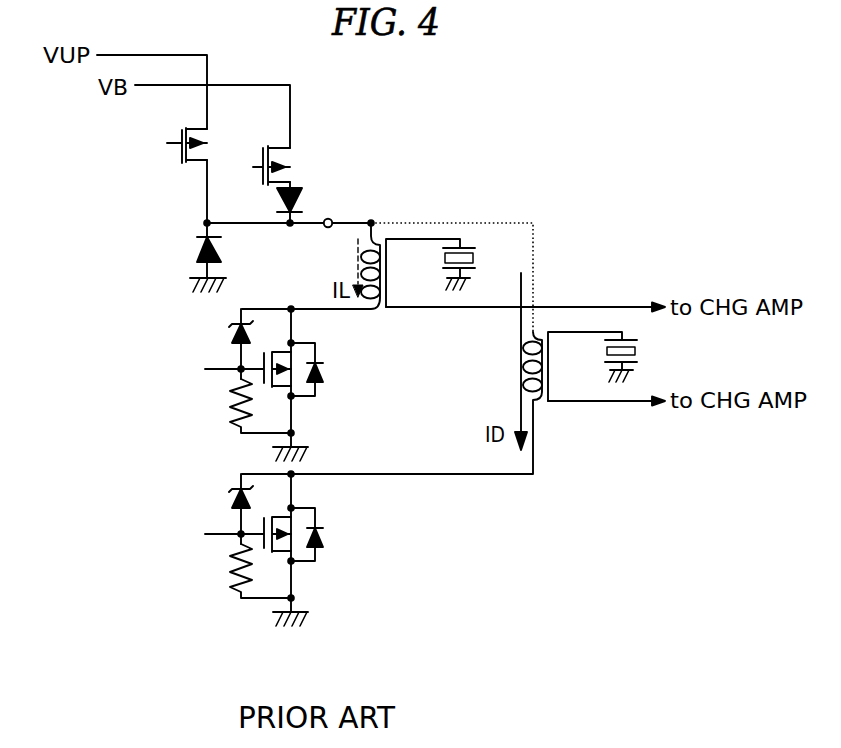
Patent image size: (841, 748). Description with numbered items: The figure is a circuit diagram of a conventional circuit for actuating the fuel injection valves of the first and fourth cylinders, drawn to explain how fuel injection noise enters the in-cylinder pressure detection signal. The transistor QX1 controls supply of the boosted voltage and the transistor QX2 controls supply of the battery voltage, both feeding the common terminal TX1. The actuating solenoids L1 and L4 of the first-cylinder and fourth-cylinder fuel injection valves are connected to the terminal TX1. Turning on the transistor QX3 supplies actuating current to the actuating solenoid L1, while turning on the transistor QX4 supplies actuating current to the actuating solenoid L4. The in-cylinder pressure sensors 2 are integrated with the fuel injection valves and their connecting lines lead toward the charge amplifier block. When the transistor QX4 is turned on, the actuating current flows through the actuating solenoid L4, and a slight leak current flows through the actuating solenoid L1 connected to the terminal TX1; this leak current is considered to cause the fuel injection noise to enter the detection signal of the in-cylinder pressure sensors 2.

The in-cylinder pressure sensor 2 is at (476, 258).
The transistor QX1 is at (212, 134).
The transistor QX2 is at (299, 175).
The transistor QX3 is at (274, 383).
The transistor QX4 is at (279, 548).
The actuating solenoid L1 is at (311, 266).
The actuating solenoid L4 is at (392, 403).
The terminal TX1 is at (344, 210).